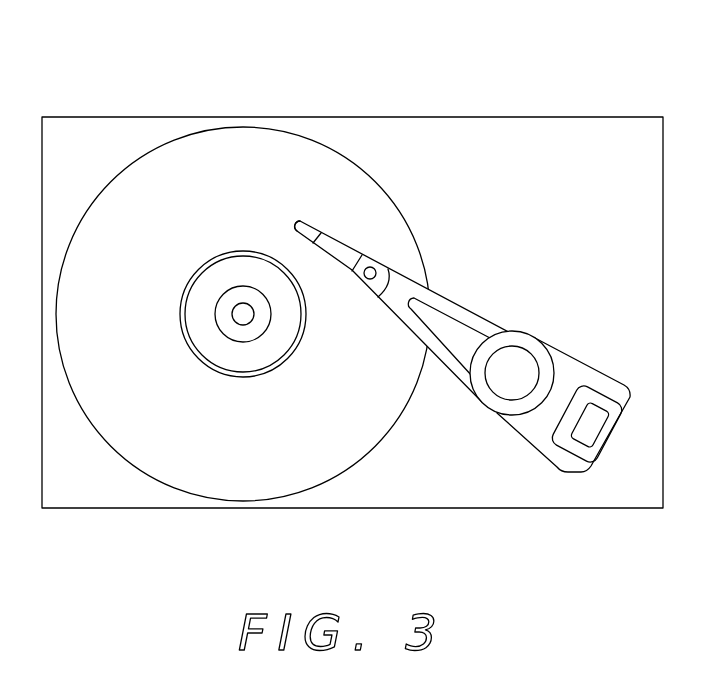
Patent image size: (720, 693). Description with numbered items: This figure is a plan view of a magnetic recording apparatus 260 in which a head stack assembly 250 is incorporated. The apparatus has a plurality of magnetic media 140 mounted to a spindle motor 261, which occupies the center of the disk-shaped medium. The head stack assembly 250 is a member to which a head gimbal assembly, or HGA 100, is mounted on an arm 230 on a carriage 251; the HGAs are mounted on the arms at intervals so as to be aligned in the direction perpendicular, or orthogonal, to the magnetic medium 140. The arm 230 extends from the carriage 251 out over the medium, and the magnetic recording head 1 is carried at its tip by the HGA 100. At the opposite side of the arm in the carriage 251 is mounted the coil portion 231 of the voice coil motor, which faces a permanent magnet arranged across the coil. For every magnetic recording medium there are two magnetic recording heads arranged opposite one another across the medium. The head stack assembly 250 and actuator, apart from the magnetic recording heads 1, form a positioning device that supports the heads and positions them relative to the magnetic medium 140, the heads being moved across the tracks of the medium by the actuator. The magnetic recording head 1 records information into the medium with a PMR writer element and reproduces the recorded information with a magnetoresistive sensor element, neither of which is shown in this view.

The magnetic recording head 1 is at (307, 225).
The head gimbal assembly (HGA) 100 is at (343, 264).
The magnetic medium 140 is at (172, 489).
The arm 230 is at (450, 370).
The coil portion of the voice coil motor 231 is at (612, 442).
The head stack assembly 250 is at (522, 436).
The carriage 251 is at (525, 332).
The magnetic recording apparatus 260 is at (392, 104).
The spindle motor 261 is at (243, 325).